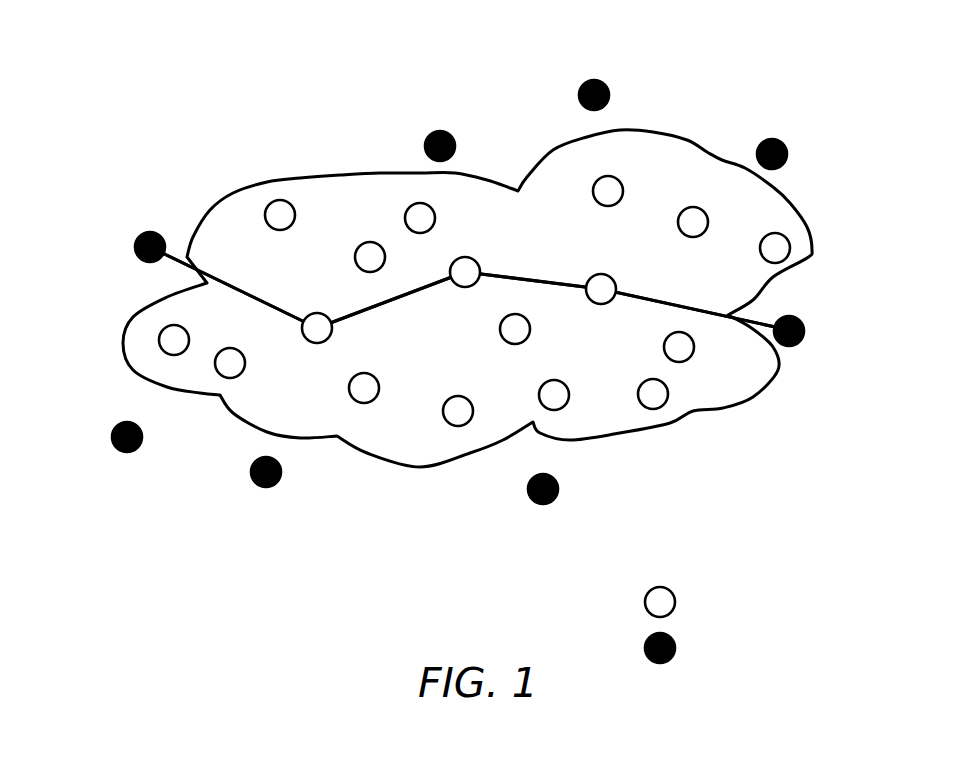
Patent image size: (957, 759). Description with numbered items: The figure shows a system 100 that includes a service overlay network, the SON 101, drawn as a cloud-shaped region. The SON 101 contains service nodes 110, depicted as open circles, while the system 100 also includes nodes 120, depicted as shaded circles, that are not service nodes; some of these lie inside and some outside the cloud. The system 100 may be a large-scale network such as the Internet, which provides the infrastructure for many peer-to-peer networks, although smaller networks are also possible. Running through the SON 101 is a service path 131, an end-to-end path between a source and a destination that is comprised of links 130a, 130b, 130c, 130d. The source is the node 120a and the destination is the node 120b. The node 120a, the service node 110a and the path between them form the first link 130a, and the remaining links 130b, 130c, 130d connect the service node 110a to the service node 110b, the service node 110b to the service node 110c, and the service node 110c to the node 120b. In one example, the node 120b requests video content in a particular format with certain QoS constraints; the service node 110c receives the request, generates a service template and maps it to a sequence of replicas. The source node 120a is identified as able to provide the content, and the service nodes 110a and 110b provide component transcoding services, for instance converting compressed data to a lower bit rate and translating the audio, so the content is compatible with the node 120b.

The system 100 is at (502, 40).
The SON 101 is at (675, 422).
The service nodes 110 is at (539, 396).
The service node 110a is at (317, 343).
The service node 110b is at (465, 287).
The service node 110c is at (601, 304).
The nodes 120 is at (462, 371).
The node 120a is at (153, 232).
The node 120b is at (802, 342).
The link 130a is at (272, 307).
The link 130b is at (397, 300).
The link 130c is at (527, 278).
The link 130d is at (677, 305).
The service path 131 is at (211, 258).